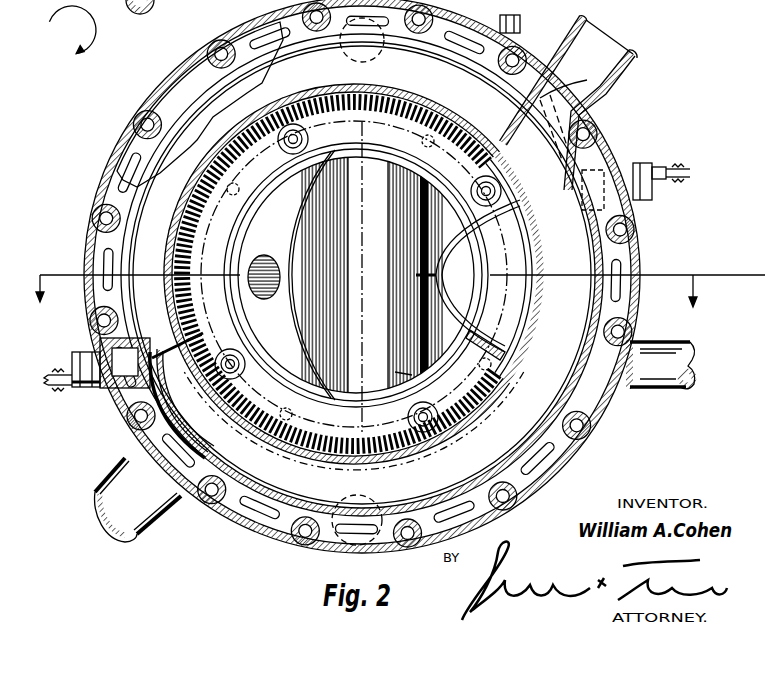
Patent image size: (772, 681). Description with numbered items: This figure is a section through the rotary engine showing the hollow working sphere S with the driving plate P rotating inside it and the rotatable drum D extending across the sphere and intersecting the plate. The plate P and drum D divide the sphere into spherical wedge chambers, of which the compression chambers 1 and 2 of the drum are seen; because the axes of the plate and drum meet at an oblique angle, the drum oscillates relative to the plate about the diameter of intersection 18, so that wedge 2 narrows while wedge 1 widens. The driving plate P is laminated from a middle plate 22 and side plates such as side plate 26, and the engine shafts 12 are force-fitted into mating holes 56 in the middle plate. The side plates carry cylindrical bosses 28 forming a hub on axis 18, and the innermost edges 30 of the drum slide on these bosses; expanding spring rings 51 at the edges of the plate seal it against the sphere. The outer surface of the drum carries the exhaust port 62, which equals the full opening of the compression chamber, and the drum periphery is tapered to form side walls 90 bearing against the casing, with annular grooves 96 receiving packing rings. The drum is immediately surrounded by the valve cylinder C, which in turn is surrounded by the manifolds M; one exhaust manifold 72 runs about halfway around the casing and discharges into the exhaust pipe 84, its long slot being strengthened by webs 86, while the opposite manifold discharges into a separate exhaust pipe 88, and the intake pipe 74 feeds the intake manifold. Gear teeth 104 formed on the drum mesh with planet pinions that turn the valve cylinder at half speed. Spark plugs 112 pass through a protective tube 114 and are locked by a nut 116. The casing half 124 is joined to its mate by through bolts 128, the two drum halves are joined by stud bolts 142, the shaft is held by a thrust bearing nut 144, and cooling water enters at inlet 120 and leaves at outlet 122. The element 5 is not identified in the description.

The compression chamber 1 is at (388, 289).
The compression chamber 2 is at (543, 267).
The vane 5 is at (427, 360).
The engine shafts 12 is at (45, 273).
The diameter of intersection 18 is at (368, 131).
The middle plate 22 is at (300, 195).
The side plate 26 is at (290, 292).
The cylindrical bosses 28 is at (392, 308).
The innermost edges of drum 30 is at (439, 244).
The expanding spring rings 51 is at (320, 210).
The mating holes 56 is at (260, 278).
The exhaust ports 62 is at (540, 287).
The exhaust manifolds 72 is at (540, 440).
The intake pipe 74 is at (660, 380).
The exhaust pipe 84 is at (605, 50).
The webs 86 is at (558, 328).
The exhaust pipe 88 is at (122, 515).
The tapered side walls 90 is at (316, 452).
The annular grooves 96 is at (325, 384).
The ring of gear teeth 104 is at (283, 144).
The spark plugs 112 is at (58, 388).
The protective tube 114 is at (110, 347).
The nut 116 is at (80, 360).
The cooling water inlet 120 is at (372, 498).
The cooling water outlet 122 is at (383, 56).
The casing half 124 is at (178, 100).
The through bolts 128 is at (210, 52).
The stud bolts 142 is at (240, 184).
The thrust bearing nut 144 is at (160, 4).
The driving plate P is at (295, 232).
The working sphere S is at (406, 318).
The drum D is at (440, 324).
The valve cylinder C is at (548, 268).
The manifolds M is at (500, 420).